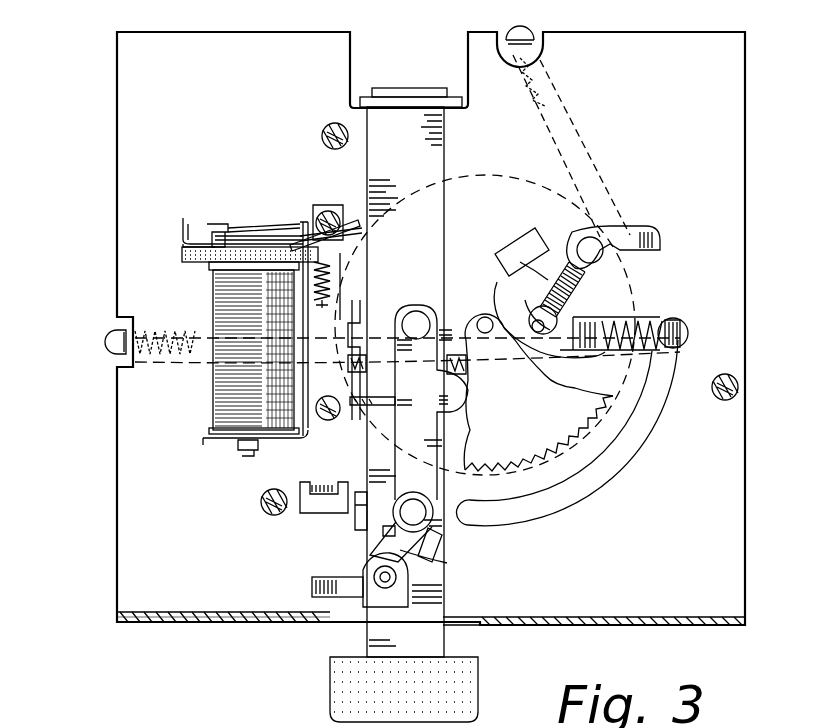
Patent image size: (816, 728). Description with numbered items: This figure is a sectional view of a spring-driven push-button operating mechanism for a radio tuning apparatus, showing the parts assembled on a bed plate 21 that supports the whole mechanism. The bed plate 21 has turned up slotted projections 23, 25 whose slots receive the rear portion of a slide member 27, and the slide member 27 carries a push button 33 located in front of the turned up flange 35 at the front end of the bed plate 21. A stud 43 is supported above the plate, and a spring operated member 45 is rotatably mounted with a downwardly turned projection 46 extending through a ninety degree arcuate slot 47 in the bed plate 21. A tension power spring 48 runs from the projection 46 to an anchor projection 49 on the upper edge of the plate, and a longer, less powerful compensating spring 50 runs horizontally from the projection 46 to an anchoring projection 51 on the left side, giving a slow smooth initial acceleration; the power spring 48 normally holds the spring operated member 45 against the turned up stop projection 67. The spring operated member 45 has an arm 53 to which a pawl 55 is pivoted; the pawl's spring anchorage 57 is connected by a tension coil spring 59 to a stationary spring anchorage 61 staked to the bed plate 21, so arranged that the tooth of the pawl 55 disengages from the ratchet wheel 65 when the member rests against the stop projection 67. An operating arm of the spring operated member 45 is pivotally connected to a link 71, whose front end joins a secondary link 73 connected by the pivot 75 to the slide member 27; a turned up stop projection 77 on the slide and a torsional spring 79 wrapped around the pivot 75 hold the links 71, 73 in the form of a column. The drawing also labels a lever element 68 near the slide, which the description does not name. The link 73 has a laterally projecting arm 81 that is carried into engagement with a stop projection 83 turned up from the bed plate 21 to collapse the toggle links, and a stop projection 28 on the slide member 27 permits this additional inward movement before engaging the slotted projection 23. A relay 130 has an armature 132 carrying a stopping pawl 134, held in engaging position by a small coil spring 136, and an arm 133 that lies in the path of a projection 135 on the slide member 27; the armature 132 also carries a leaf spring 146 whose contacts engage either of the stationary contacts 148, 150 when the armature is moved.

The bed plate 21 is at (117, 166).
The turned up slotted projection 23 is at (346, 406).
The turned up slotted projection 25 is at (398, 105).
The slide member 27 is at (440, 155).
The stop projection 28 is at (355, 520).
The push button 33 is at (470, 676).
The turned up flange 35 is at (198, 622).
The stud 43 is at (486, 340).
The spring operated member 45 is at (500, 300).
The downwardly turned projection 46 is at (689, 333).
The arcuate slot 47 is at (625, 468).
The tension power spring 48 is at (560, 92).
The anchor projection 49 is at (520, 30).
The compensating spring 50 is at (168, 360).
The anchoring projection 51 is at (112, 343).
The arm 53 is at (585, 238).
The pawl 55 is at (660, 238).
The spring anchorage 57 is at (535, 271).
The tension coil spring 59 is at (578, 293).
The stationary spring anchorage 61 is at (541, 308).
The ratchet wheel 65 is at (505, 455).
The stop projection 67 is at (520, 246).
The lever 68 is at (422, 304).
The link 71 is at (530, 399).
The secondary link 73 is at (375, 560).
The pivot 75 is at (378, 577).
The turned up stop projection 77 is at (442, 532).
The torsional spring 79 is at (447, 563).
The arm 81 is at (312, 586).
The stop projection 83 is at (324, 482).
The relay 130 is at (226, 312).
The armature 132 is at (250, 228).
The arm 133 is at (355, 247).
The stopping pawl 134 is at (342, 215).
The projection 135 is at (350, 312).
The coil spring 136 is at (348, 262).
The leaf spring 146 is at (236, 228).
The stationary contact 148 is at (215, 224).
The stationary contact 150 is at (208, 262).